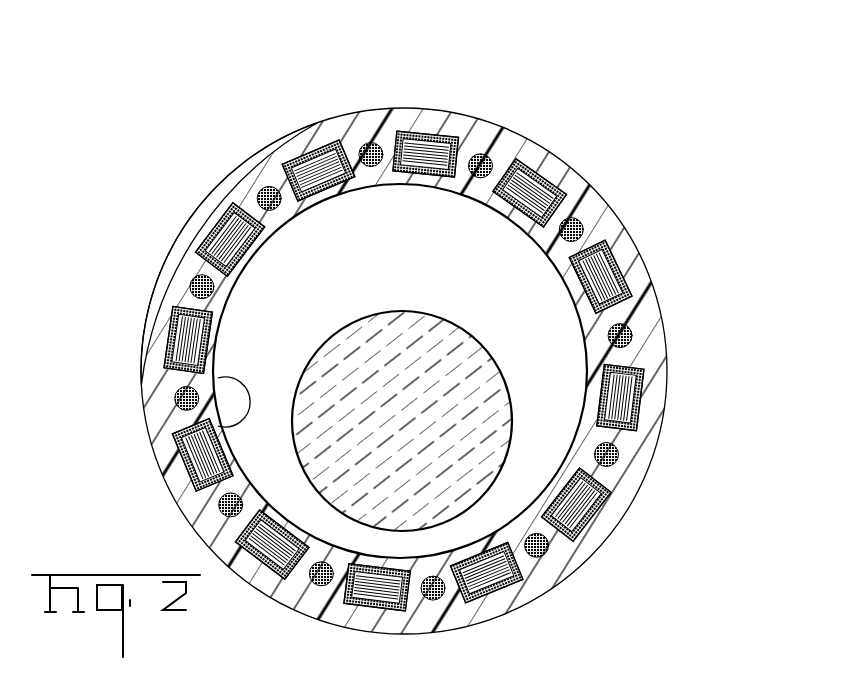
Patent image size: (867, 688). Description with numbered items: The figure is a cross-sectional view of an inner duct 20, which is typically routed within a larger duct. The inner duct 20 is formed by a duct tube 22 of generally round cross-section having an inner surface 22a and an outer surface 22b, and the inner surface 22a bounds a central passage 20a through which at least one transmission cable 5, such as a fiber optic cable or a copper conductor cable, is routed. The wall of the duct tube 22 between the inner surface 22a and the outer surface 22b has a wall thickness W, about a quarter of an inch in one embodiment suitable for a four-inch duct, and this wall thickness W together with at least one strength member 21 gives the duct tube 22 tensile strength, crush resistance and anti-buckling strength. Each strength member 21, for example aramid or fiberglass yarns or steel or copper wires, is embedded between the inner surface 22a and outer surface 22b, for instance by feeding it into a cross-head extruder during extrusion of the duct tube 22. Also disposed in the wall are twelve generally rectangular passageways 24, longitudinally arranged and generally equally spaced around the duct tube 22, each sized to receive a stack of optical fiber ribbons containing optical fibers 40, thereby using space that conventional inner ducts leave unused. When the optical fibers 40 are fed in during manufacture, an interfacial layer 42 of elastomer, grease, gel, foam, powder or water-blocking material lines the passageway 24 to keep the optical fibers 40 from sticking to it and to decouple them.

The transmission cable 5 is at (478, 505).
The inner duct 20 is at (232, 114).
The central passage 20a is at (520, 290).
The strength member 21 is at (582, 253).
The duct tube 22 is at (230, 178).
The inner surface 22a is at (173, 392).
The outer surface 22b is at (176, 241).
The passageway 24 is at (588, 513).
The optical fiber 40 is at (430, 135).
The interfacial layer 42 is at (190, 485).
The wall thickness W is at (350, 190).